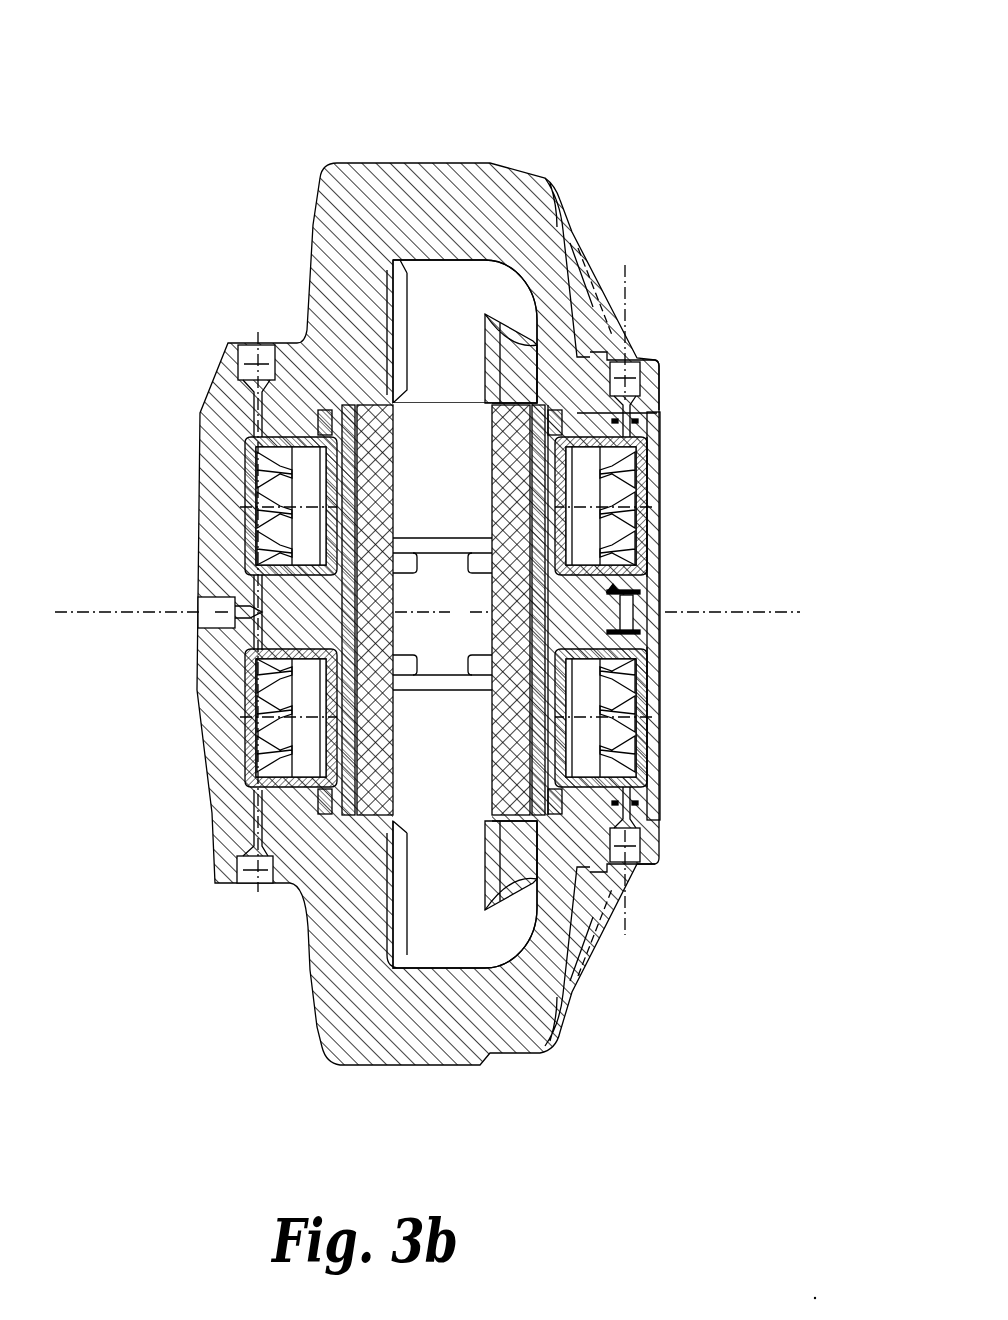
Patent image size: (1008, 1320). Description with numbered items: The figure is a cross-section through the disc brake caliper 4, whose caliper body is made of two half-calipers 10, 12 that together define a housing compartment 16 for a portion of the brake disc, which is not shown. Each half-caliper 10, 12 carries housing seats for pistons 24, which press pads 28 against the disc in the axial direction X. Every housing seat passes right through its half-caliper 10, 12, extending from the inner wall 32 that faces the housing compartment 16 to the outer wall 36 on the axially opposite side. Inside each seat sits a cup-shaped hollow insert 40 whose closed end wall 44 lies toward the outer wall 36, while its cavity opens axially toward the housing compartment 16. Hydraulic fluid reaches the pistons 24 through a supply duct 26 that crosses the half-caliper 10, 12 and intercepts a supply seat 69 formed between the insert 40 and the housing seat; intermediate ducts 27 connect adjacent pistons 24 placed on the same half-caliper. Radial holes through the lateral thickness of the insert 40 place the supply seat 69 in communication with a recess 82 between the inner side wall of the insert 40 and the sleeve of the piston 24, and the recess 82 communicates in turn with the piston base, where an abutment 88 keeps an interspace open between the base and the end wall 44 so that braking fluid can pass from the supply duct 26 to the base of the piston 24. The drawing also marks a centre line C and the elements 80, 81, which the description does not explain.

The disc brake caliper 4 is at (330, 108).
The half-caliper 10 is at (584, 345).
The half-caliper 12 is at (318, 270).
The housing compartment 16 is at (453, 930).
The piston 24 is at (248, 482).
The supply duct 26 is at (248, 352).
The intermediate duct 27 is at (255, 605).
The pad 28 is at (372, 790).
The inner wall 32 is at (480, 232).
The outer wall 36 is at (665, 378).
The cup-shaped hollow insert 40 is at (666, 466).
The closed end wall 44 is at (640, 733).
The supply seat 69 is at (642, 420).
The bearing 80 is at (557, 398).
The bearing 81 is at (568, 822).
The recess 82 is at (548, 785).
The abutment 88 is at (640, 503).
The axis C is at (625, 268).
The axial direction X is at (66, 612).